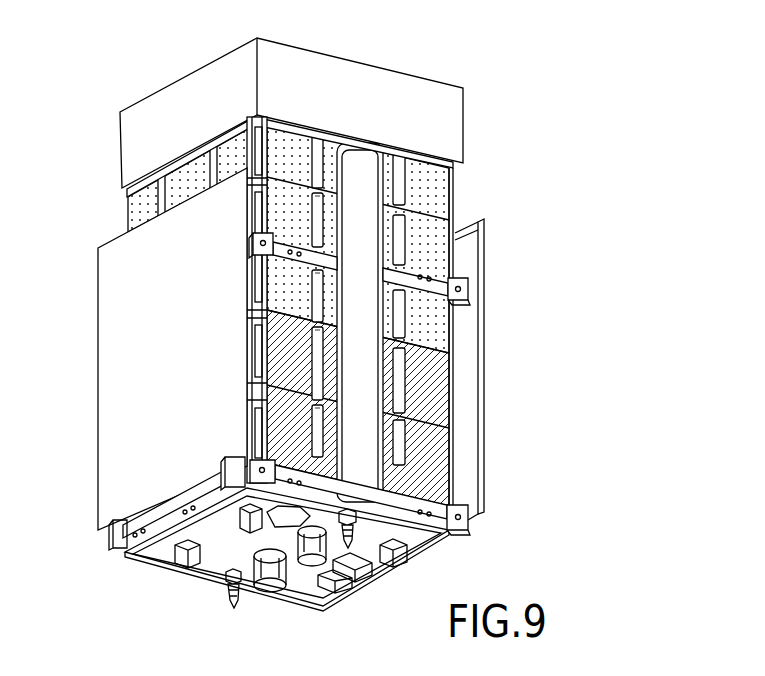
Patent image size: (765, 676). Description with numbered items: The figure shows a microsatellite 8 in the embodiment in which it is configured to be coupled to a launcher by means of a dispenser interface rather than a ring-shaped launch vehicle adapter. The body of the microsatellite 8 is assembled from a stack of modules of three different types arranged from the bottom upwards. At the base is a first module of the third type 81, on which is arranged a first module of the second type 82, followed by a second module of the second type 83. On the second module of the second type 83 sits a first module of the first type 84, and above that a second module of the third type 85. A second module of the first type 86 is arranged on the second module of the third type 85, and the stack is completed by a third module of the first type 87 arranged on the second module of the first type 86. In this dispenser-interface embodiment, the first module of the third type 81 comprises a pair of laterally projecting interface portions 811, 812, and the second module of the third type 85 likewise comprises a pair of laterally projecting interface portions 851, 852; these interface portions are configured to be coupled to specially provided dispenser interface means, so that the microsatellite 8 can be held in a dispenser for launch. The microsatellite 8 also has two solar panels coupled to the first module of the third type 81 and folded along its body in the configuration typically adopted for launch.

The microsatellite 8 is at (517, 81).
The first module of the third type 81 is at (371, 541).
The interface portion 811 is at (470, 523).
The interface portion 812 is at (233, 497).
The first module of the second type 82 is at (450, 463).
The second module of the second type 83 is at (443, 387).
The first module of the first type 84 is at (442, 323).
The second module of the third type 85 is at (334, 277).
The interface portion 851 is at (467, 295).
The interface portion 852 is at (247, 242).
The second module of the first type 86 is at (487, 248).
The third module of the first type 87 is at (440, 193).